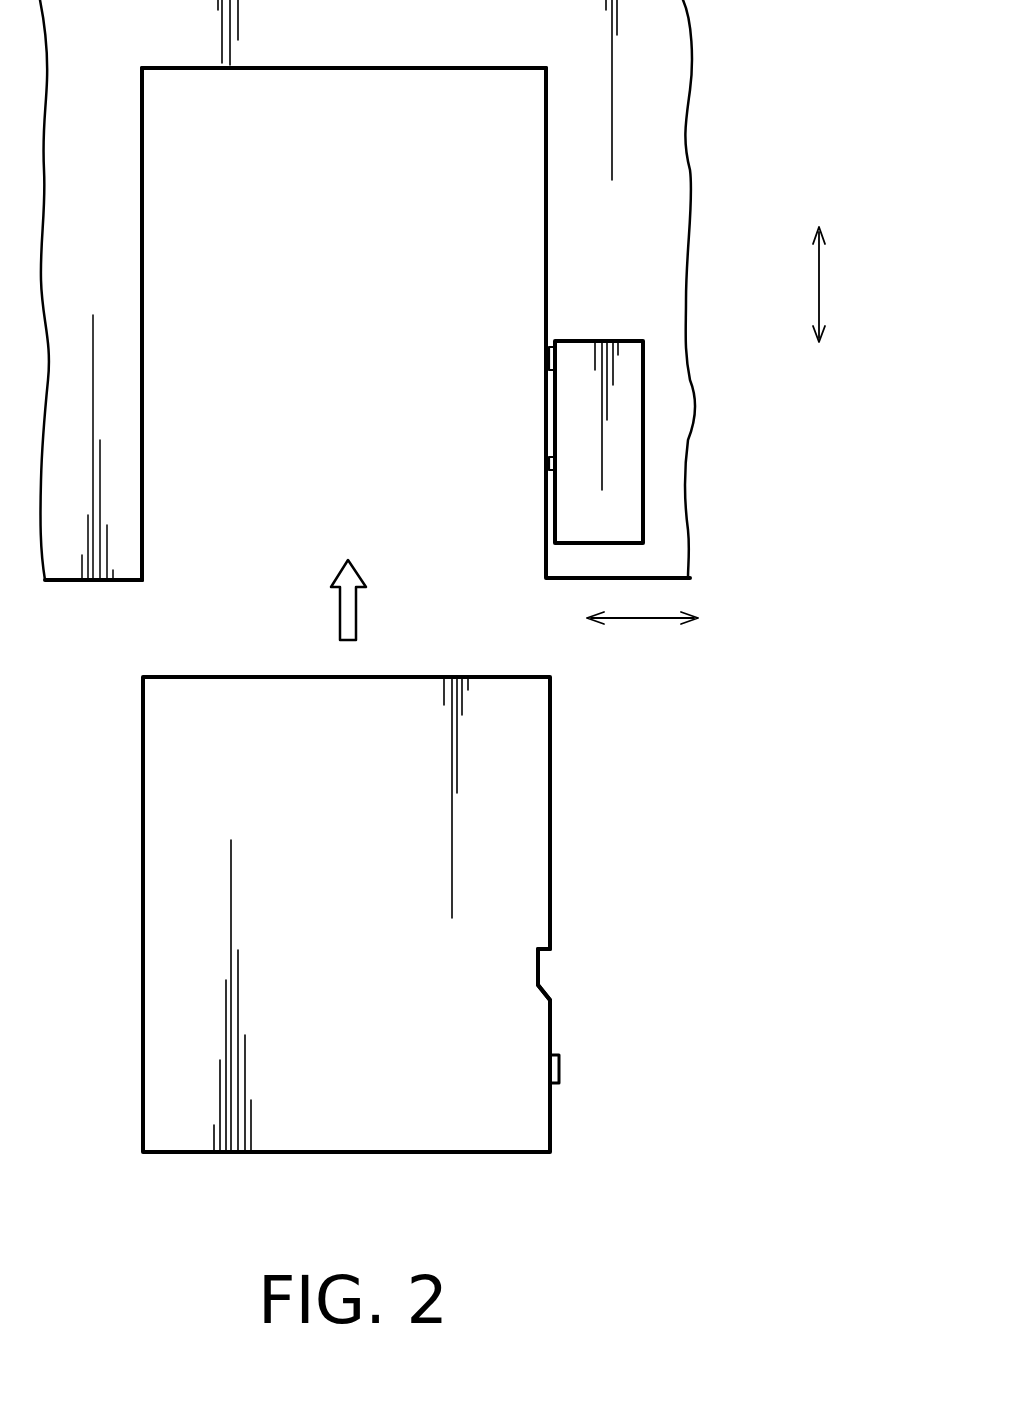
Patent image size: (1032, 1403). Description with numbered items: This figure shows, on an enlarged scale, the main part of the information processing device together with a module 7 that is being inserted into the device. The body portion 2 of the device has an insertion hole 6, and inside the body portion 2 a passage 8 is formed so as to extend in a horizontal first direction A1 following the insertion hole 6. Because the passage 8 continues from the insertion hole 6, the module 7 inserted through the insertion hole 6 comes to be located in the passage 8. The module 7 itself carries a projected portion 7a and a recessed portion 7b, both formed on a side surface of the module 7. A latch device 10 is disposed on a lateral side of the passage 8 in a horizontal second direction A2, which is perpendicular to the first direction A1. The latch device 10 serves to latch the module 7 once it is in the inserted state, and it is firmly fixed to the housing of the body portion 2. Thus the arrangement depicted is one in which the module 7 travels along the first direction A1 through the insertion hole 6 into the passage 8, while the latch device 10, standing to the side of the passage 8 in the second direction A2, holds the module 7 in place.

The body portion 2 is at (672, 518).
The insertion hole 6 is at (147, 567).
The module 7 is at (155, 905).
The projected portion 7a is at (562, 1063).
The recessed portion 7b is at (545, 967).
The passage 8 is at (365, 292).
The latch device 10 is at (627, 438).
The first direction A1 is at (822, 285).
The second direction A2 is at (630, 618).